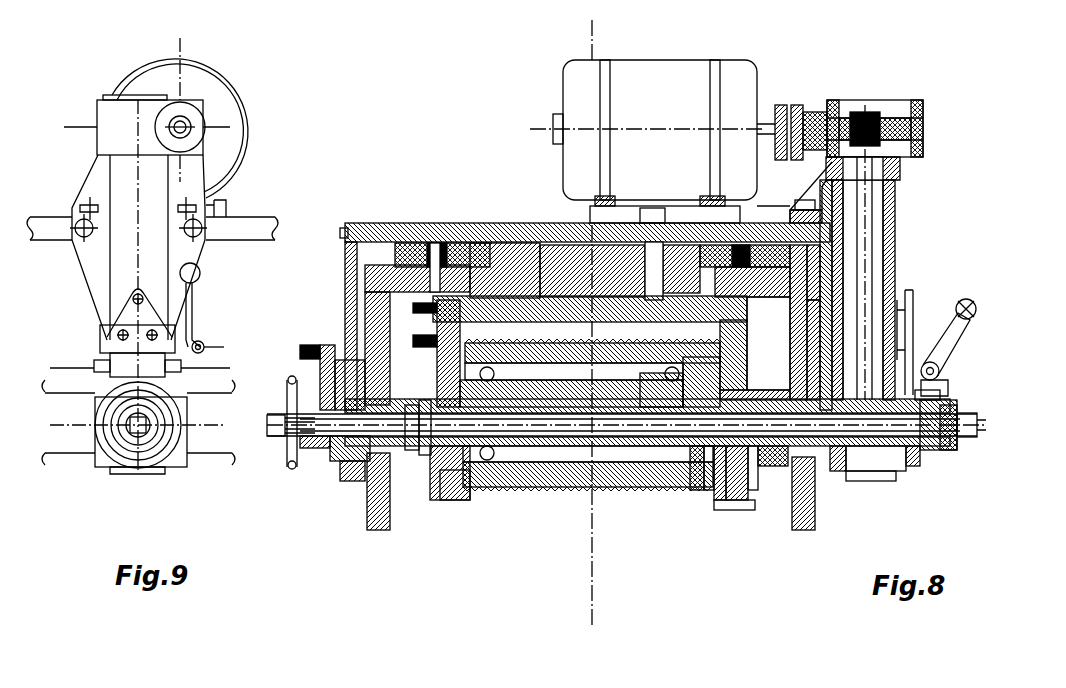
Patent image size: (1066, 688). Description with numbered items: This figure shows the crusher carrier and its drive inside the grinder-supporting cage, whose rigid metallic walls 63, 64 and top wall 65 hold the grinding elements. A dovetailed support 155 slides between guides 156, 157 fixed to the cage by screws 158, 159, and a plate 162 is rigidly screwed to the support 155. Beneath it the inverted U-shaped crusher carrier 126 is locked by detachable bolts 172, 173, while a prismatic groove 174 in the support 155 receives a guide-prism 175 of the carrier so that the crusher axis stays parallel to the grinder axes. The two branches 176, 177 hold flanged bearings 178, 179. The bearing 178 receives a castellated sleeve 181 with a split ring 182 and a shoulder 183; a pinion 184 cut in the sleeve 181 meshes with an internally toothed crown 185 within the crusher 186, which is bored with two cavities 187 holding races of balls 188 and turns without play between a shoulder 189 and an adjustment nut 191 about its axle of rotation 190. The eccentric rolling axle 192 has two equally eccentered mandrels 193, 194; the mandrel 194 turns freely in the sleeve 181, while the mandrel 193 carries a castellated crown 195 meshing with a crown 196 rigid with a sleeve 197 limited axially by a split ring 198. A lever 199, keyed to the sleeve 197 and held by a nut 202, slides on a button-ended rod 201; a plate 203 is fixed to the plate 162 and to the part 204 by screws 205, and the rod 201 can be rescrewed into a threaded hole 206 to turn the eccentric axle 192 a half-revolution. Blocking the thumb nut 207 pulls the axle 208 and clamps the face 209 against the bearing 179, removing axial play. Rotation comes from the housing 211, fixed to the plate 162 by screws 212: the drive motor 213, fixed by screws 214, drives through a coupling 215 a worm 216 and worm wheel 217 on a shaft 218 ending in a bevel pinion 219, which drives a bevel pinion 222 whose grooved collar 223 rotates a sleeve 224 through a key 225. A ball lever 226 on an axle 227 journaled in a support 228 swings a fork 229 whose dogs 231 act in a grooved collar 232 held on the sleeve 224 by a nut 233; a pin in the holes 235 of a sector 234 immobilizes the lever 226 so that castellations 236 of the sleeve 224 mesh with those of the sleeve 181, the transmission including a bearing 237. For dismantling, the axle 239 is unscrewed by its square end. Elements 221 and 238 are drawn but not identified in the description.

In FIG. 8, the metallic wall 63 is at (804, 532).
In FIG. 8, the metallic wall 64 is at (378, 532).
In FIG. 8, the metallic wall 65 is at (351, 250).
In FIG. 8, the crusher carrier 126 is at (593, 342).
In FIG. 8, the support 155 is at (560, 242).
In FIG. 8, the guide 156 is at (445, 262).
In FIG. 8, the guide 157 is at (745, 287).
In FIG. 8, the screw 158 is at (440, 250).
In FIG. 8, the screw 159 is at (748, 240).
In FIG. 9, the plate 162 is at (245, 232).
In FIG. 8, the plate 162 is at (470, 232).
In FIG. 8, the bolt 172 is at (520, 240).
In FIG. 8, the bolt 173 is at (655, 240).
In FIG. 8, the longitudinal prismatic groove 174 is at (600, 242).
In FIG. 8, the guide-prism 175 is at (585, 242).
In FIG. 8, the branch 176 is at (736, 502).
In FIG. 8, the branch 177 is at (462, 502).
In FIG. 8, the flanged bearing 178 is at (752, 492).
In FIG. 8, the flanged bearing 179 is at (450, 502).
In FIG. 8, the castellated sleeve 181 is at (720, 502).
In FIG. 8, the split ring 182 is at (750, 392).
In FIG. 8, the shoulder 183 is at (740, 512).
In FIG. 8, the externally toothed pinion 184 is at (708, 492).
In FIG. 8, the internally toothed crown 185 is at (749, 352).
In FIG. 8, the crusher 186 is at (620, 462).
In FIG. 8, the cavity 187 is at (505, 355).
In FIG. 8, the balls 188 is at (700, 362).
In FIG. 8, the shoulder 189 is at (665, 490).
In FIG. 8, the axle of rotation 190 is at (592, 500).
In FIG. 8, the adjustment nut 191 is at (468, 492).
In FIG. 8, the rolling axle 192 is at (568, 462).
In FIG. 8, the mandrel 193 is at (438, 502).
In FIG. 8, the mandrel 194 is at (697, 492).
In FIG. 8, the castellated crown 195 is at (410, 452).
In FIG. 8, the crown 196 is at (424, 458).
In FIG. 8, the sleeve 197 is at (388, 520).
In FIG. 8, the split ring 198 is at (342, 456).
In FIG. 8, the lever 199 is at (320, 375).
In FIG. 8, the button-ended rod 201 is at (330, 345).
In FIG. 8, the nut 202 is at (310, 450).
In FIG. 8, the plate 203 is at (345, 262).
In FIG. 8, the part 204 is at (367, 520).
In FIG. 8, the screw 205 is at (348, 476).
In FIG. 8, the threaded hole 206 is at (345, 350).
In FIG. 8, the thumb nut 207 is at (290, 385).
In FIG. 8, the axle 208 is at (272, 418).
In FIG. 8, the face 209 is at (538, 462).
In FIG. 9, the housing 211 is at (107, 188).
In FIG. 8, the housing 211 is at (896, 205).
In FIG. 8, the screw 212 is at (792, 208).
In FIG. 9, the drive motor 213 is at (222, 93).
In FIG. 8, the drive motor 213 is at (632, 78).
In FIG. 8, the screw 214 is at (606, 198).
In FIG. 8, the coupling 215 is at (797, 105).
In FIG. 8, the worm 216 is at (838, 108).
In FIG. 8, the worm wheel 217 is at (880, 115).
In FIG. 8, the shaft 218 is at (868, 236).
In FIG. 8, the bevel pinion 219 is at (902, 312).
In FIG. 8, the flange 221 is at (900, 176).
In FIG. 8, the bevel pinion 222 is at (850, 472).
In FIG. 8, the grooved collar 223 is at (880, 482).
In FIG. 9, the sleeve 224 is at (130, 445).
In FIG. 8, the sleeve 224 is at (930, 452).
In FIG. 8, the key 225 is at (912, 466).
In FIG. 9, the ball lever 226 is at (196, 308).
In FIG. 8, the ball lever 226 is at (944, 345).
In FIG. 9, the axle 227 is at (100, 360).
In FIG. 8, the axle 227 is at (948, 384).
In FIG. 9, the support 228 is at (135, 316).
In FIG. 8, the support 228 is at (910, 300).
In FIG. 9, the fork 229 is at (108, 392).
In FIG. 8, the fork 229 is at (942, 393).
In FIG. 9, the dog 231 is at (112, 440).
In FIG. 8, the dog 231 is at (958, 438).
In FIG. 9, the grooved collar 232 is at (140, 452).
In FIG. 8, the grooved collar 232 is at (950, 450).
In FIG. 9, the nut 233 is at (146, 446).
In FIG. 8, the nut 233 is at (945, 400).
In FIG. 8, the sector 234 is at (977, 316).
In FIG. 8, the hole 235 is at (940, 372).
In FIG. 8, the castellations 236 is at (770, 467).
In FIG. 8, the bearing 237 is at (838, 472).
In FIG. 8, the sleeve 238 is at (640, 462).
In FIG. 8, the axle 239 is at (986, 428).